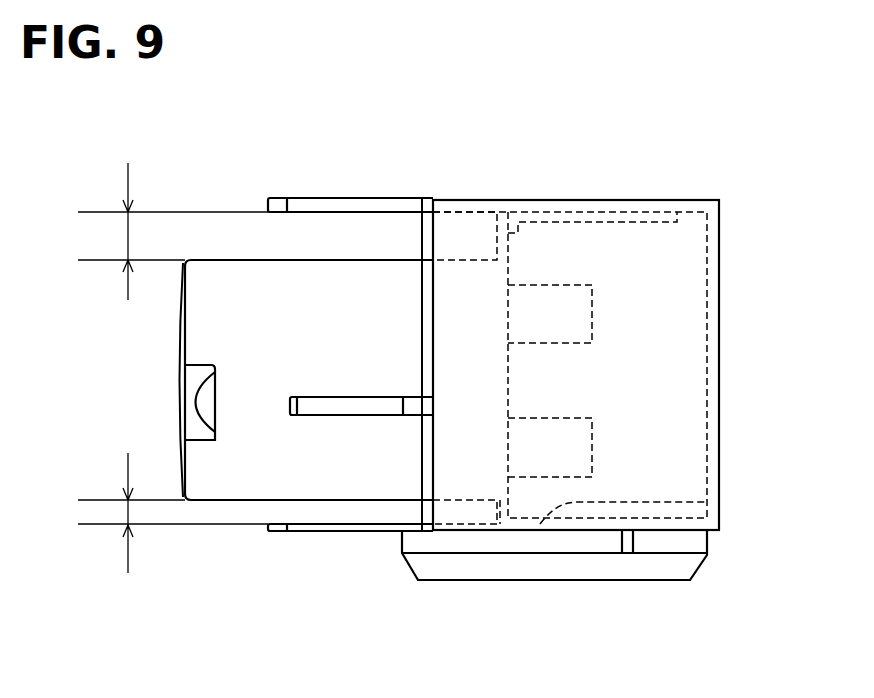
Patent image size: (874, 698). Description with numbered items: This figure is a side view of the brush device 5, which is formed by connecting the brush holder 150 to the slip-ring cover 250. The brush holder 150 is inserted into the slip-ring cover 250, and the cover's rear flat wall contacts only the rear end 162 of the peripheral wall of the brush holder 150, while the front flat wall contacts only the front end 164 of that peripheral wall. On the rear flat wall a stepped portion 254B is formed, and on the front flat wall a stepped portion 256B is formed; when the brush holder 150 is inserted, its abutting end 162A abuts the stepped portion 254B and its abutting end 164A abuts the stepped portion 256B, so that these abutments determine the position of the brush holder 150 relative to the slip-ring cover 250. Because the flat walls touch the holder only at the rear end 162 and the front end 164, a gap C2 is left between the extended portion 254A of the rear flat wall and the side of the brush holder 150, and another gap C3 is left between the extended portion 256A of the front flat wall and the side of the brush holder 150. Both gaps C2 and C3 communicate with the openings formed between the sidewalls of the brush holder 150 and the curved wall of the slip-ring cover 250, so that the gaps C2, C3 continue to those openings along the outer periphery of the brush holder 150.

The brush device 5 is at (672, 137).
The brush holder 150 is at (247, 261).
The slip-ring cover 250 is at (684, 200).
The extended portion of the rear flat wall 254A is at (350, 198).
The stepped portion 254B is at (552, 200).
The extended portion of the front flat wall 256A is at (350, 532).
The stepped portion 256B is at (716, 494).
The rear end of the peripheral wall 162 is at (462, 200).
The abutting end 162A is at (507, 200).
The front end of the peripheral wall 164 is at (465, 540).
The abutting end 164A is at (500, 540).
The gap C2 is at (173, 231).
The gap C3 is at (173, 513).